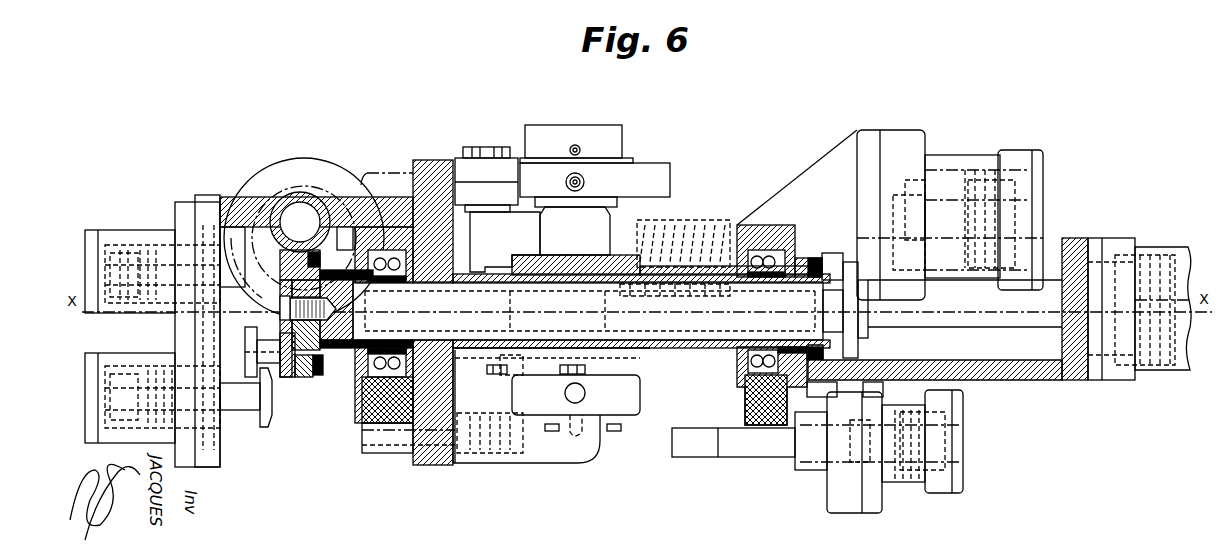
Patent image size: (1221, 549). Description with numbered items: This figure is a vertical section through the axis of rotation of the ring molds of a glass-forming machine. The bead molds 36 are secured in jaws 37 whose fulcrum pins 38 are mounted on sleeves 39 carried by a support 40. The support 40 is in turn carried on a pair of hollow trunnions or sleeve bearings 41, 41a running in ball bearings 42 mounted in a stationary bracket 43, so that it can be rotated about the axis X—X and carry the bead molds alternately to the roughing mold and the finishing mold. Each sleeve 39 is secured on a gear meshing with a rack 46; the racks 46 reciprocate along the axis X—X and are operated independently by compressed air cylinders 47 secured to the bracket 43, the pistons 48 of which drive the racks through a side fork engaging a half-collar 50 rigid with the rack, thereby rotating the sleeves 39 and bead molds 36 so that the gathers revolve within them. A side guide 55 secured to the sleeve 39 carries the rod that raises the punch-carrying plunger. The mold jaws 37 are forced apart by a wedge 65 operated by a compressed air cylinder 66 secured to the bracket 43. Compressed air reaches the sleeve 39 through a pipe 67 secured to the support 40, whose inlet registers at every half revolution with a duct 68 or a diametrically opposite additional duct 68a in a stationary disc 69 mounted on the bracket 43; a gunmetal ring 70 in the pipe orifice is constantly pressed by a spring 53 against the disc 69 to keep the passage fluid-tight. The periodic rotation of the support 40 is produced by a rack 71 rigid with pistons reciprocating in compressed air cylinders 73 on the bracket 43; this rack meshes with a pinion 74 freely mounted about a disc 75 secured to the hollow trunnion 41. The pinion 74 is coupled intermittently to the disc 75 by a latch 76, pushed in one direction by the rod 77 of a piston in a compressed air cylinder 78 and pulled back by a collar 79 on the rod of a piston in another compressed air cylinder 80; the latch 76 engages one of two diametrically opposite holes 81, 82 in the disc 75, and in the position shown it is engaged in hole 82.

The bead mold 36 is at (620, 138).
The jaw 37 is at (668, 184).
The fulcrum pin 38 is at (492, 153).
The sleeve 39 is at (540, 239).
The support 40 is at (568, 267).
The hollow trunnion 41 is at (472, 280).
The hollow trunnion 41a is at (698, 343).
The ball bearing 42 is at (380, 256).
The bracket 43 is at (1038, 372).
The rack 46 is at (389, 328).
The compressed air cylinder 47 is at (1148, 246).
The piston 48 is at (1165, 350).
The half-collar 50 is at (850, 349).
The spring 53 is at (513, 440).
The side guide 55 is at (679, 221).
The wedge 65 is at (693, 448).
The compressed air cylinder 66 is at (902, 480).
The pipe 67 is at (565, 457).
The duct 68 is at (430, 448).
The additional duct 68a is at (379, 181).
The stationary disc 69 is at (424, 172).
The gunmetal ring 70 is at (455, 462).
The rack 71 is at (300, 212).
The compressed air cylinder 73 is at (262, 179).
The pinion 74 is at (303, 377).
The disc 75 is at (320, 348).
The latch 76 is at (260, 350).
The rod 77 is at (230, 282).
The compressed air cylinder 78 is at (127, 235).
The collar 79 is at (268, 414).
The compressed air cylinder 80 is at (133, 437).
The hole 81 is at (292, 258).
The hole 82 is at (293, 358).